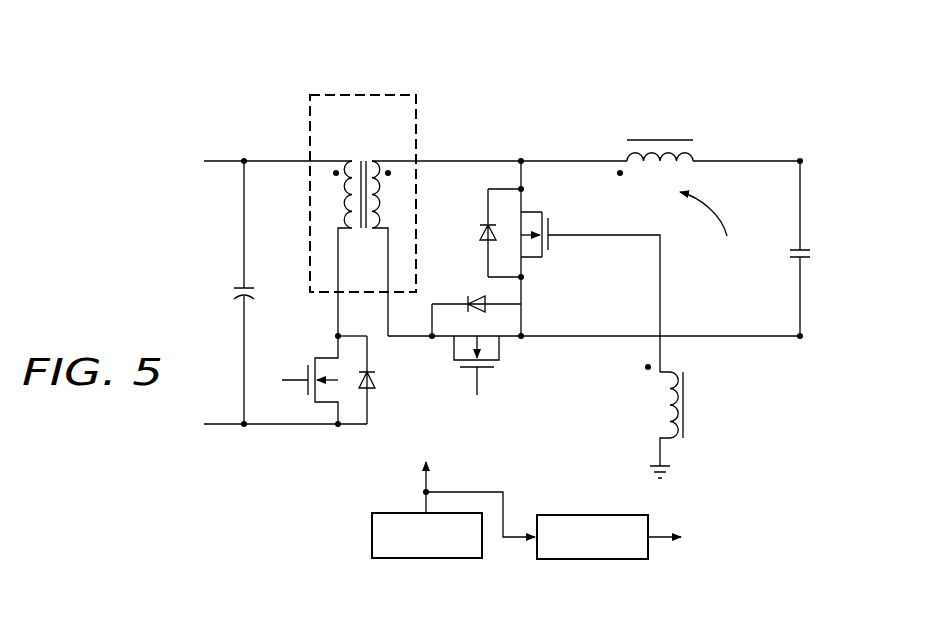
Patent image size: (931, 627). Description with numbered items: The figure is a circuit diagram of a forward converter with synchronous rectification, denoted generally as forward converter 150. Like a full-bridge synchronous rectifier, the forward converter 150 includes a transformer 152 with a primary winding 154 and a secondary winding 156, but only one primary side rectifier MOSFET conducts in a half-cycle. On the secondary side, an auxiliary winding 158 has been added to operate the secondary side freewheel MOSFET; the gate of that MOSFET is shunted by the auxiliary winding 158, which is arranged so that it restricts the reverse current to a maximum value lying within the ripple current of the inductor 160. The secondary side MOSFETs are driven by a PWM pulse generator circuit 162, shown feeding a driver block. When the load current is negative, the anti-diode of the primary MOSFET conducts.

The forward converter 150 is at (158, 249).
The transformer 152 is at (353, 92).
The primary winding 154 is at (349, 160).
The secondary winding 156 is at (375, 160).
The auxiliary winding 158 is at (687, 428).
The inductor 160 is at (696, 157).
The PWM pulse generator circuit 162 is at (372, 537).